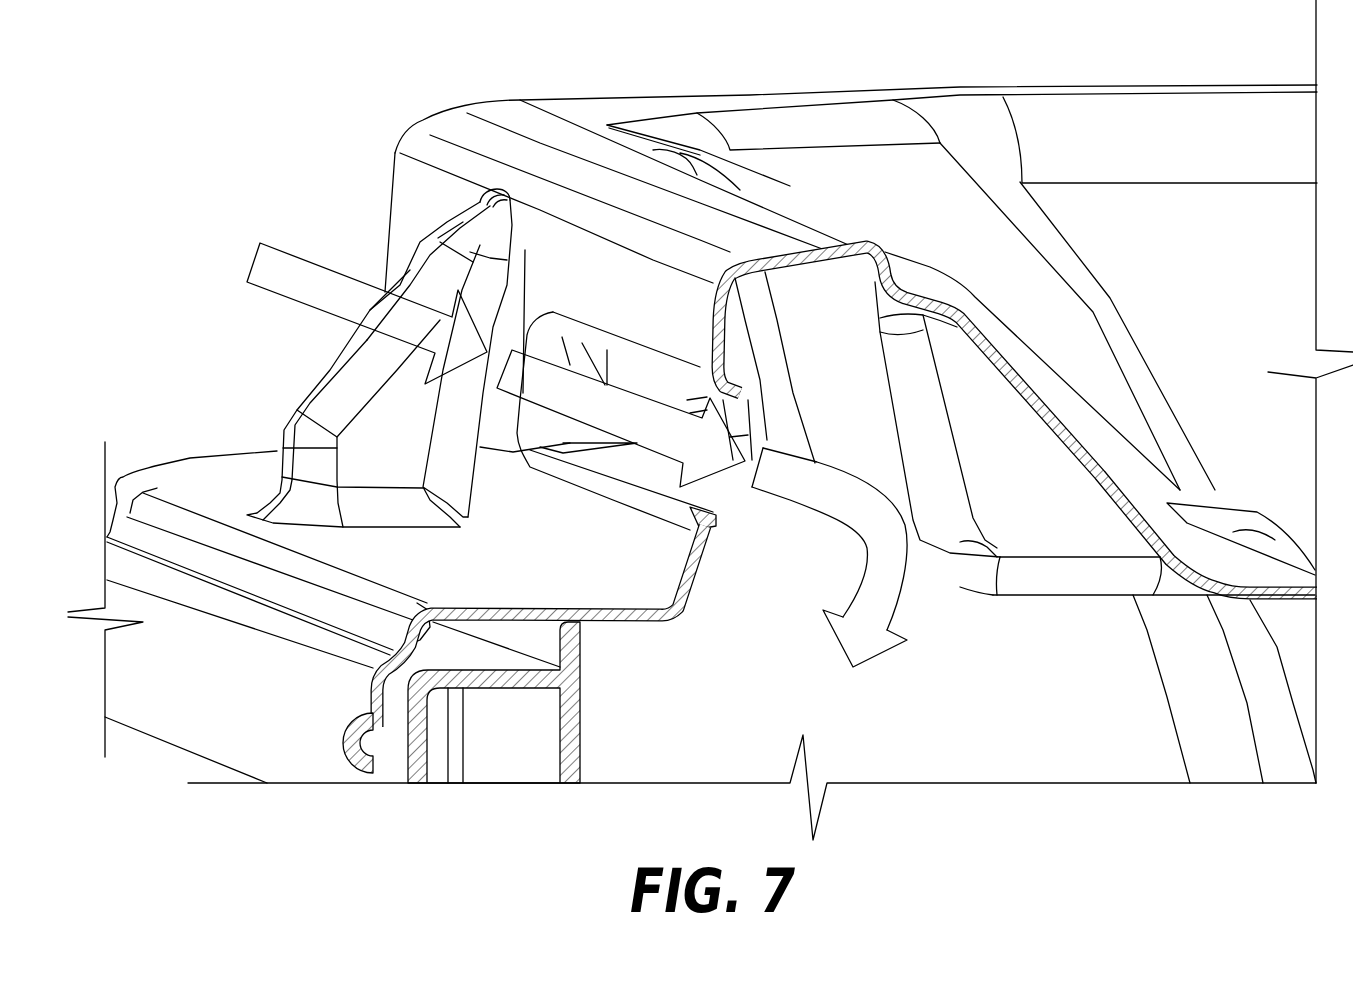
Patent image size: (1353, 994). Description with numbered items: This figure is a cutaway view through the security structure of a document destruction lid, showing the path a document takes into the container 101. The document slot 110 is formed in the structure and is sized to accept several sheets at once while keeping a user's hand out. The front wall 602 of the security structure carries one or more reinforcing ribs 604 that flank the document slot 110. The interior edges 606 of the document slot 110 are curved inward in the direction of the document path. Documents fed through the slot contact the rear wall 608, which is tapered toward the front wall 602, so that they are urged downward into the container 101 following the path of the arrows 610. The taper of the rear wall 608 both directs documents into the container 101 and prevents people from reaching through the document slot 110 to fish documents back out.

The container 101 is at (1107, 747).
The document slot 110 is at (527, 463).
The front wall 602 is at (540, 248).
The reinforcing ribs 604 is at (300, 507).
The interior edges 606 is at (705, 522).
The rear wall 608 is at (877, 403).
The arrows 610 is at (870, 640).